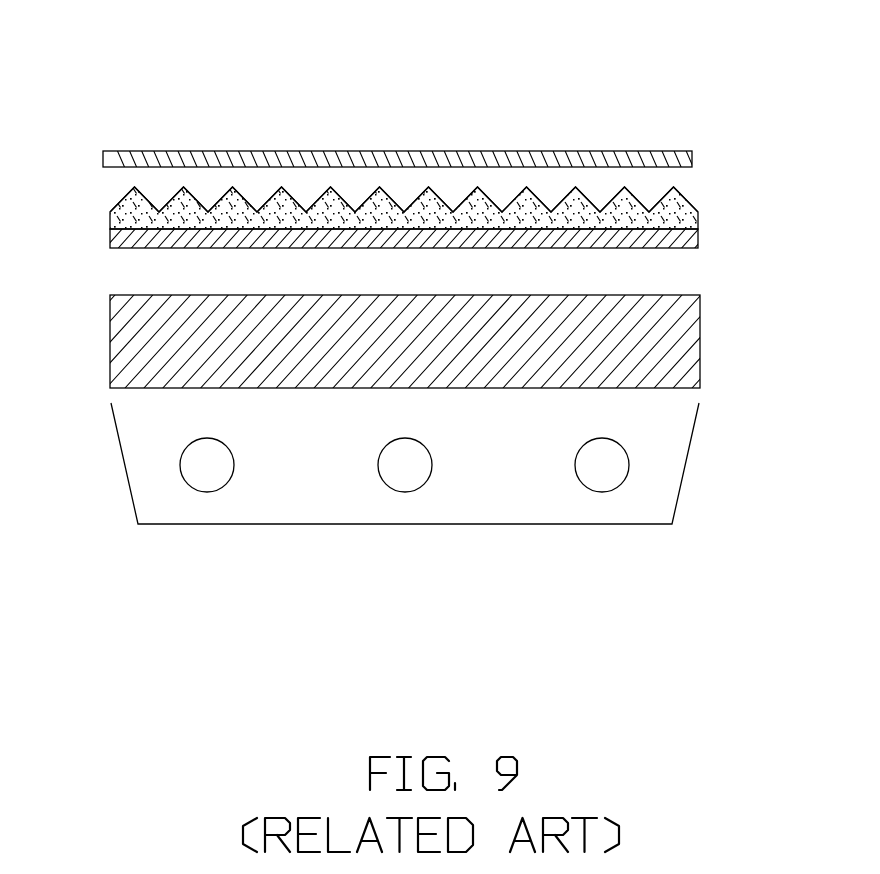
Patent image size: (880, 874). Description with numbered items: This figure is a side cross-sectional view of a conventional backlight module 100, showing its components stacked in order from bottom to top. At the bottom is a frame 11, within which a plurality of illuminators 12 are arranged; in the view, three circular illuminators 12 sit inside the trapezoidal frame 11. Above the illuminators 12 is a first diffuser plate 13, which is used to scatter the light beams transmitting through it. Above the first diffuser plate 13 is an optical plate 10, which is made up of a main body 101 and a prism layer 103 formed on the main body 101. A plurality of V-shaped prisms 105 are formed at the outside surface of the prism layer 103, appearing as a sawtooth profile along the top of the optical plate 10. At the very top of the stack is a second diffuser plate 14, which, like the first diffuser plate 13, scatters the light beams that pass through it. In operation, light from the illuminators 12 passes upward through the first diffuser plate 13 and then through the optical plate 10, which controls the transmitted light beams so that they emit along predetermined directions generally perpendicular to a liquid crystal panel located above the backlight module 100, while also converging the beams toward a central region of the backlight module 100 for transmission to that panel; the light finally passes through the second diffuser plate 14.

The backlight module 100 is at (262, 77).
The second diffuser plate 14 is at (687, 160).
The optical plate 10 is at (423, 217).
The prism layer 103 is at (677, 223).
The V-shaped prisms 105 is at (119, 210).
The main body 101 is at (687, 241).
The first diffuser plate 13 is at (701, 341).
The illuminators 12 is at (610, 457).
The frame 11 is at (447, 463).